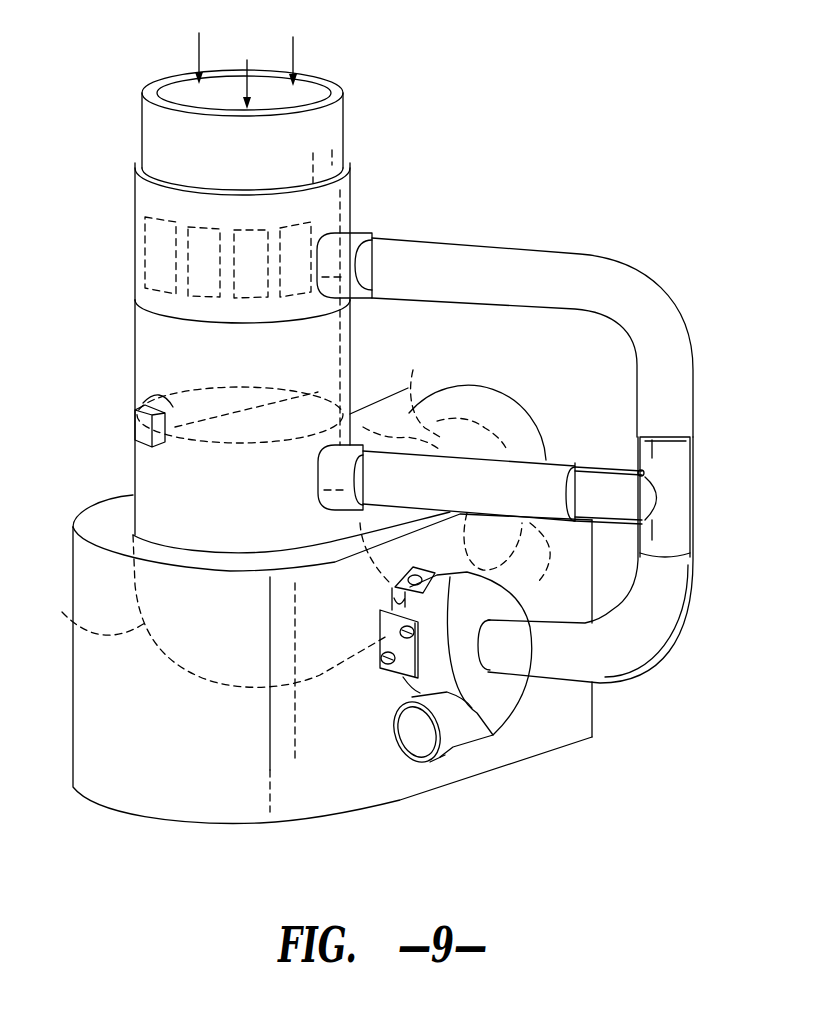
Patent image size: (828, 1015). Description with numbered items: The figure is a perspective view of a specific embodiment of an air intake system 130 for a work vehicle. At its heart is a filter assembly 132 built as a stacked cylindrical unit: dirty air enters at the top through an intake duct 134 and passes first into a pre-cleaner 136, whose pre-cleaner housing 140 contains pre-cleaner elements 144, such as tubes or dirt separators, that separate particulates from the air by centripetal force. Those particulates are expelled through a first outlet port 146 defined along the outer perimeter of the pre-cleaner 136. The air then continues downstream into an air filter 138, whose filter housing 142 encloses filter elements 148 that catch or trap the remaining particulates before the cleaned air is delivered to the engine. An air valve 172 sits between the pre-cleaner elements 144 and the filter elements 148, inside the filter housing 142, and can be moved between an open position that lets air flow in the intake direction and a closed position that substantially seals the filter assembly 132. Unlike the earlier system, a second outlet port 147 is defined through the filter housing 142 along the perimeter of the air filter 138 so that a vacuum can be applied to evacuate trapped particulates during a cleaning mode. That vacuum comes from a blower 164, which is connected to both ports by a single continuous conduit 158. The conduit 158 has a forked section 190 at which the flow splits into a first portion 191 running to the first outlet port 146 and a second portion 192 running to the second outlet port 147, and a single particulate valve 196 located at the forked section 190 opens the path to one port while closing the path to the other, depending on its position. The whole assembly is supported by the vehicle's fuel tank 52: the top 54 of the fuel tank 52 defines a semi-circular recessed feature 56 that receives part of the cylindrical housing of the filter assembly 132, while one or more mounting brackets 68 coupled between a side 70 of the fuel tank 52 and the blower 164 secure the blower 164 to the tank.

The air intake system 130 is at (387, 447).
The intake duct 134 is at (140, 133).
The pre-cleaner elements 144 is at (138, 228).
The pre-cleaner 136 is at (136, 257).
The pre-cleaner housing 140 is at (132, 343).
The air valve 172 is at (120, 389).
The filter assembly 132 is at (118, 463).
The top 54 is at (108, 518).
The recessed feature 56 is at (64, 620).
The fuel tank 52 is at (128, 762).
The side 70 is at (343, 790).
The mounting brackets 68 is at (388, 635).
The blower 164 is at (468, 723).
The first outlet port 146 is at (357, 235).
The first portion 191 is at (427, 242).
The conduit 158 is at (682, 309).
The second outlet port 147 is at (355, 445).
The filter elements 148 is at (442, 459).
The air filter 138 is at (461, 396).
The filter housing 142 is at (498, 408).
The second portion 192 is at (483, 472).
The forked section 190 is at (640, 468).
The particulate valve 196 is at (650, 476).